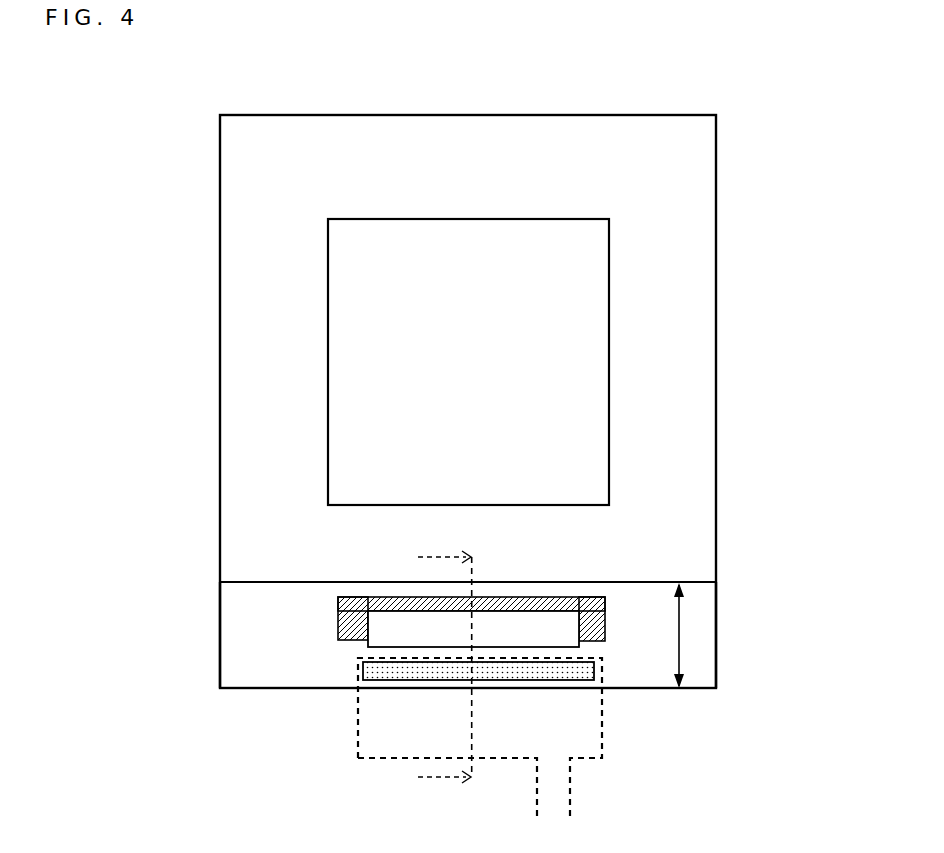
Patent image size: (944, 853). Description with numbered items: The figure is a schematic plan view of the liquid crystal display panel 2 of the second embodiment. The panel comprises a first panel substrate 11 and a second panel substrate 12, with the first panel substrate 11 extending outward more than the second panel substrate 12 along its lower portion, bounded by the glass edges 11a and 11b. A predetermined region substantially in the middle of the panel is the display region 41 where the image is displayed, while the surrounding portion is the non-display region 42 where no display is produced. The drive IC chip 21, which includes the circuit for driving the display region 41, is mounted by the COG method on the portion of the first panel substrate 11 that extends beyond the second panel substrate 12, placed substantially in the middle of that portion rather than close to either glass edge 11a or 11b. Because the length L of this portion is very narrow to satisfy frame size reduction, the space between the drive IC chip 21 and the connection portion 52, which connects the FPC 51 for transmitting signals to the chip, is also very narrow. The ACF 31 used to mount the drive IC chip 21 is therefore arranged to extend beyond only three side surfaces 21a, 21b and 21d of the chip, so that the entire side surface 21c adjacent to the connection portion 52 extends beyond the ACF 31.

The liquid crystal display panel 2 is at (782, 97).
The second panel substrate 12 is at (717, 230).
The display region 41 is at (360, 358).
The non-display region 42 is at (693, 358).
The ACF 31 is at (340, 597).
The drive IC chip 21 is at (455, 599).
The side surface 21a is at (338, 624).
The side surface 21b is at (503, 597).
The side surface 21c is at (548, 649).
The side surface 21d is at (606, 627).
The first panel substrate 11 is at (638, 689).
The glass edge 11a is at (220, 660).
The glass edge 11b is at (717, 660).
The FPC 51 is at (580, 760).
The connection portion 52 is at (368, 680).